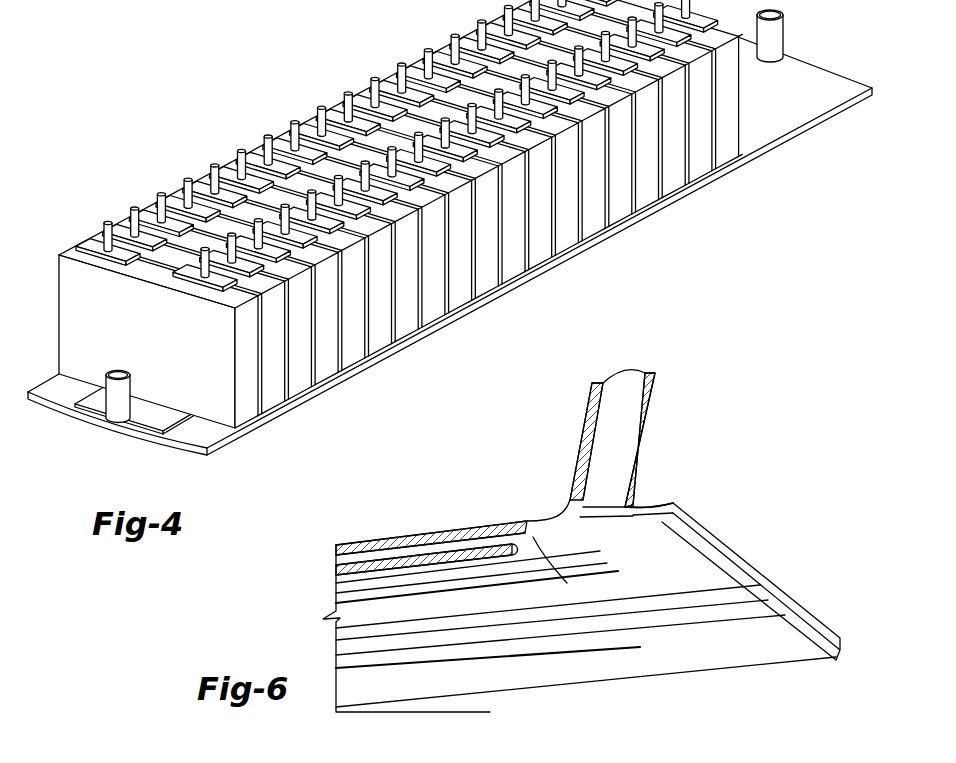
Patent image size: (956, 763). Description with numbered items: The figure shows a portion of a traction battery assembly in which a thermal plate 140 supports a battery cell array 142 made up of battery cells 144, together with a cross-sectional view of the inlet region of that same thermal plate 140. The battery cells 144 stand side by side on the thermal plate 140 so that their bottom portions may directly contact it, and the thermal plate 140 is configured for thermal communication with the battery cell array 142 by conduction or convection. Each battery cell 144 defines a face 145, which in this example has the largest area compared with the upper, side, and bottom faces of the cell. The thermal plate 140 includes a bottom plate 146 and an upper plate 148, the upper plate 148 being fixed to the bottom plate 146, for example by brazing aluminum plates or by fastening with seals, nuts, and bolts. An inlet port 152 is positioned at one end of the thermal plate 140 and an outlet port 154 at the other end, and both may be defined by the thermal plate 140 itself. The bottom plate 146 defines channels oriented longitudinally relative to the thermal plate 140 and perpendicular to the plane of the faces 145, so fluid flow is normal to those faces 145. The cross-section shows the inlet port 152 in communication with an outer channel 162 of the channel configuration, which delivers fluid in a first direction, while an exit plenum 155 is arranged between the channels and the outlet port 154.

In FIG. 4, the thermal plate 140 is at (450, 248).
In FIG. 6, the thermal plate 140 is at (601, 625).
In FIG. 4, the battery cell array 142 is at (343, 57).
In FIG. 4, the battery cells 144 is at (445, 45).
In FIG. 4, the face 145 is at (90, 316).
In FIG. 4, the bottom plate 146 is at (441, 320).
In FIG. 6, the bottom plate 146 is at (830, 648).
In FIG. 4, the upper plate 148 is at (762, 125).
In FIG. 6, the upper plate 148 is at (813, 625).
In FIG. 4, the inlet port 152 is at (773, 33).
In FIG. 6, the inlet port 152 is at (643, 432).
In FIG. 4, the outlet port 154 is at (125, 387).
In FIG. 4, the exit plenum 155 is at (150, 418).
In FIG. 6, the outer channel 162 is at (433, 672).